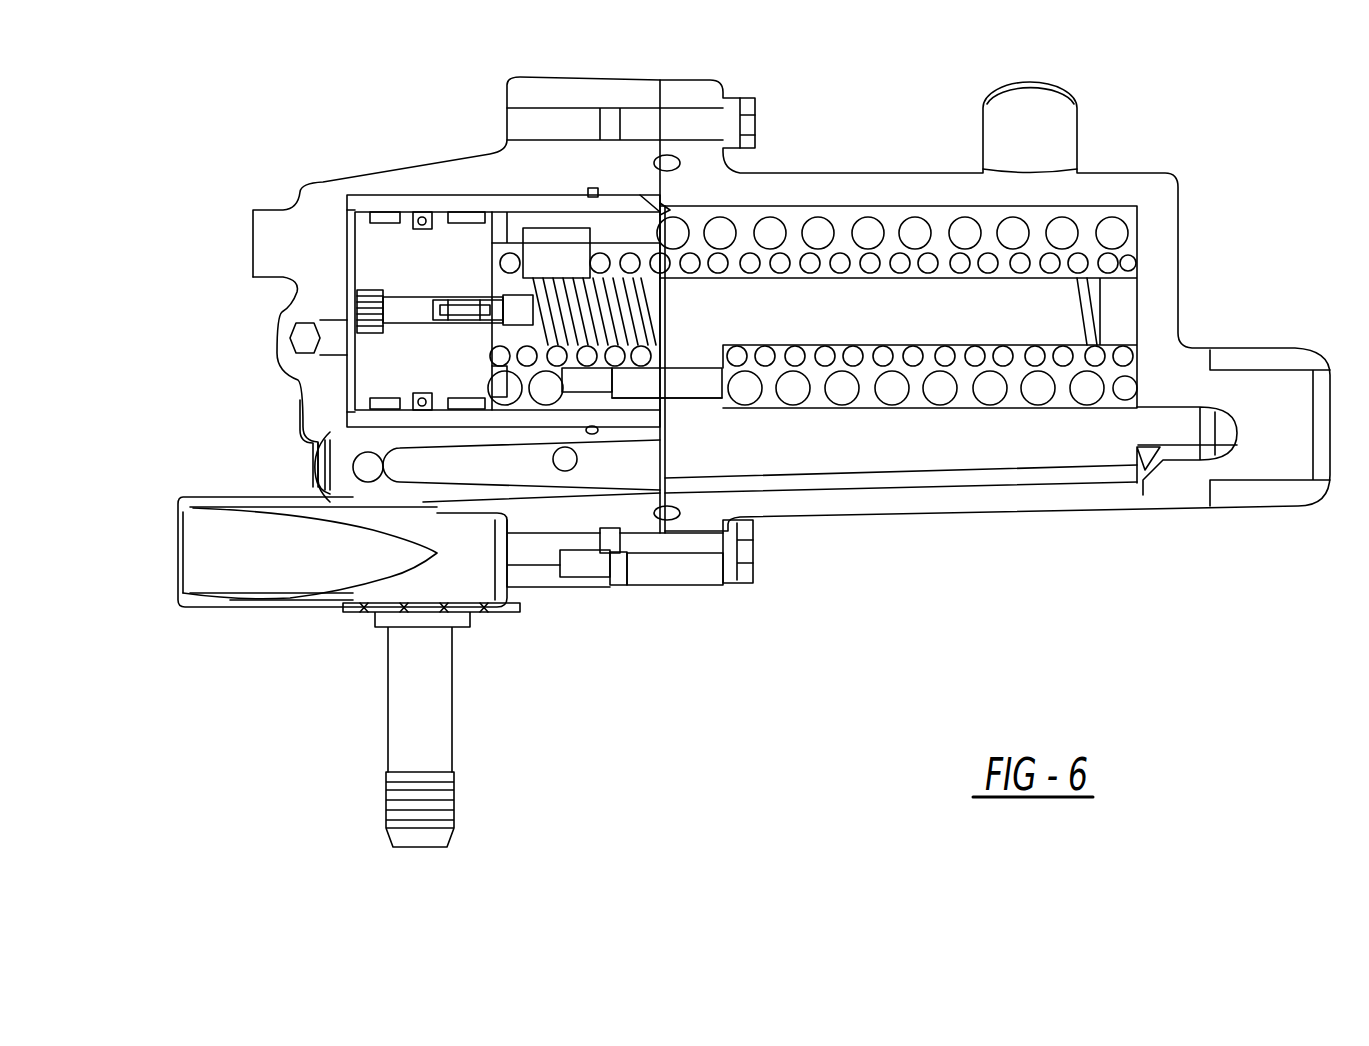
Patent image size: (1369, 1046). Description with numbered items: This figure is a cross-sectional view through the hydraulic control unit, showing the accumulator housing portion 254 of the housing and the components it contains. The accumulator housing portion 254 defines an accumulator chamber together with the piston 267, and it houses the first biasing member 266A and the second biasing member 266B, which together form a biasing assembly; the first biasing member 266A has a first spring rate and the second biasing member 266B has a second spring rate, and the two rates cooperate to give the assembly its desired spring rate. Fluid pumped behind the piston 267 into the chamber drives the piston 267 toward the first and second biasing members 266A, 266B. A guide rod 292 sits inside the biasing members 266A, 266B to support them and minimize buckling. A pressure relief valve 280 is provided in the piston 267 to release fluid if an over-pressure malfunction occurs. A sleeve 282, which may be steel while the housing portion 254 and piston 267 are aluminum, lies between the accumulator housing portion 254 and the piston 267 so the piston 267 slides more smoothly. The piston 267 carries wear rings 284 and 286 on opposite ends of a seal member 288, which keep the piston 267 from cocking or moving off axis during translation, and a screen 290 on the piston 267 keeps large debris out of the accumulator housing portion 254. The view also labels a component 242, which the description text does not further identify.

The accumulator housing portion 254 is at (757, 207).
The first biasing member 266A is at (817, 230).
The second biasing member 266B is at (870, 260).
The piston 267 is at (393, 250).
The pressure relief valve 280 is at (482, 303).
The sleeve 282 is at (522, 413).
The wear ring 284 is at (387, 402).
The wear ring 286 is at (468, 402).
The seal member 288 is at (423, 402).
The screen 290 is at (357, 302).
The guide rod 292 is at (918, 313).
The pin 242 is at (594, 434).